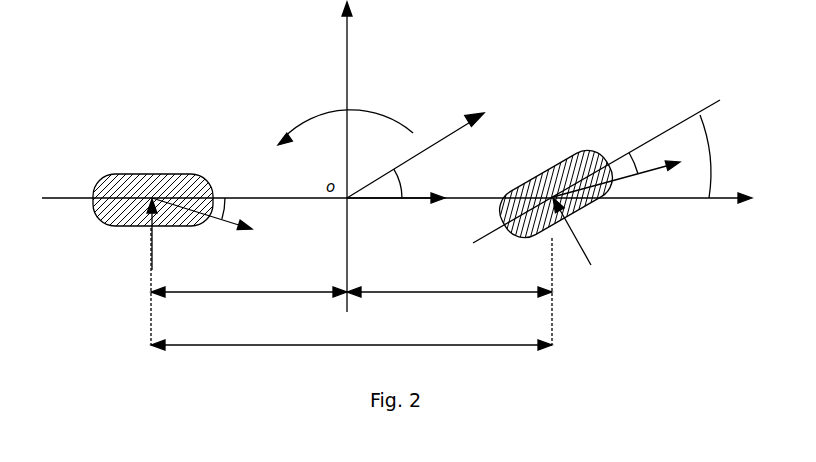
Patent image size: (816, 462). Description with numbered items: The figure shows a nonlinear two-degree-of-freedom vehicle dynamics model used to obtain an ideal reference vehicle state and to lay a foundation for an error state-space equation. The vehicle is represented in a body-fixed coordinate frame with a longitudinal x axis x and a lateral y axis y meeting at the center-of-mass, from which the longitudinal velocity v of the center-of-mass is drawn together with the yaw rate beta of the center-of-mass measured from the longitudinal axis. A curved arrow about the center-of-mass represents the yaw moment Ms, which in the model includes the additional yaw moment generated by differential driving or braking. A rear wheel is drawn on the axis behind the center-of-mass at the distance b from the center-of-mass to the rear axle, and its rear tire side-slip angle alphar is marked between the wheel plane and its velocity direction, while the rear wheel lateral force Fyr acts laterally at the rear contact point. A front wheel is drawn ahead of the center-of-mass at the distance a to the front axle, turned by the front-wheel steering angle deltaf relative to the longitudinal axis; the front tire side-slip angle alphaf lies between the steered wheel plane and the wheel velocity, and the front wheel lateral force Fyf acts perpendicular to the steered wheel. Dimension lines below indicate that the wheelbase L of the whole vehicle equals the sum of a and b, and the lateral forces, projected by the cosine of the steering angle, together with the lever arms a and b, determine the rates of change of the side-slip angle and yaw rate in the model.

The x axis x is at (397, 209).
The y axis y is at (359, 157).
The longitudinal velocity v is at (396, 209).
The yaw rate beta is at (415, 155).
The yaw moment Ms is at (340, 114).
The rear tire side-slip angle alphar is at (159, 200).
The rear wheel lateral force Fyr is at (133, 238).
The front-wheel steering angle deltaf is at (598, 181).
The front tire side-slip angle alphaf is at (616, 162).
The front wheel lateral force Fyf is at (584, 231).
The center-of-mass to rear axle distance b is at (249, 281).
The center-of-mass to front axle distance a is at (449, 282).
The wheelbase L is at (351, 336).